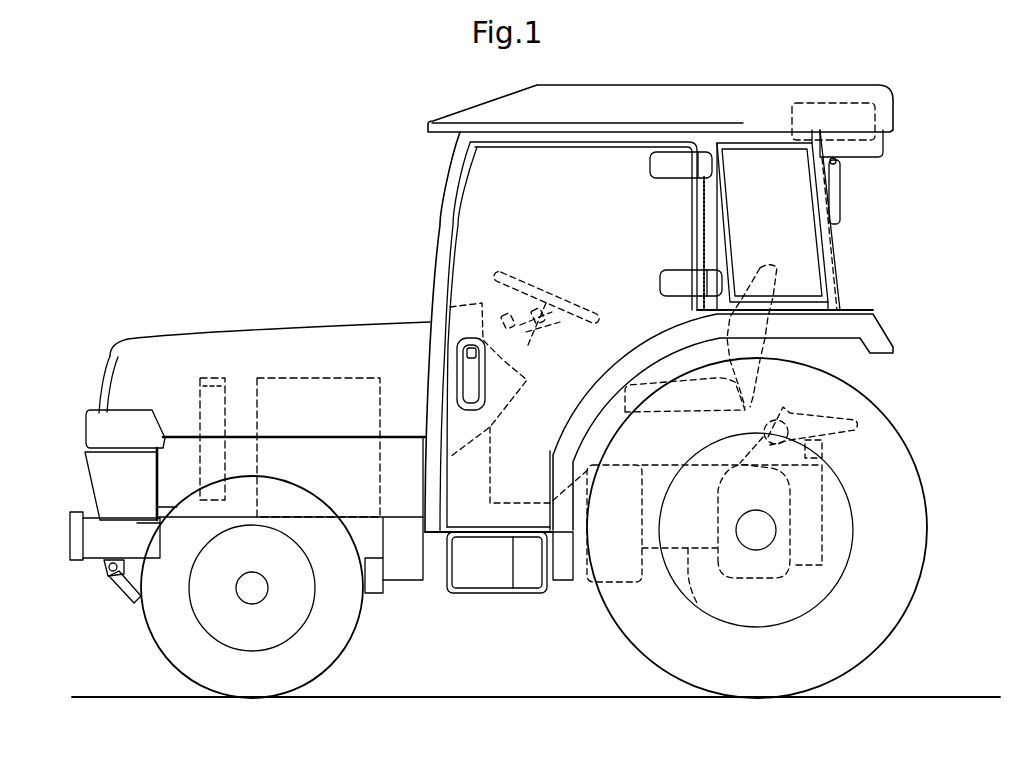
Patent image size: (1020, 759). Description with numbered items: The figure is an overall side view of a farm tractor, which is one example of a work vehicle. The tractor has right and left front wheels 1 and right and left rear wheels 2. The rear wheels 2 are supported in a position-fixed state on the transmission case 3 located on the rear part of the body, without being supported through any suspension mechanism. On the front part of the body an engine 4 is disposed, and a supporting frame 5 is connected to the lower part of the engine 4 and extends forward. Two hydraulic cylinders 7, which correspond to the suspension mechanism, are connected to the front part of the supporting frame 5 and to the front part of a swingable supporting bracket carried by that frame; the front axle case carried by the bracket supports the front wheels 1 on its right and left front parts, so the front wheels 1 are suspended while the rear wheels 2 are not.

The front wheels 1 is at (175, 640).
The rear wheels 2 is at (632, 628).
The transmission case 3 is at (694, 603).
The engine 4 is at (300, 378).
The supporting frame 5 is at (112, 532).
The hydraulic cylinders 7 is at (130, 592).